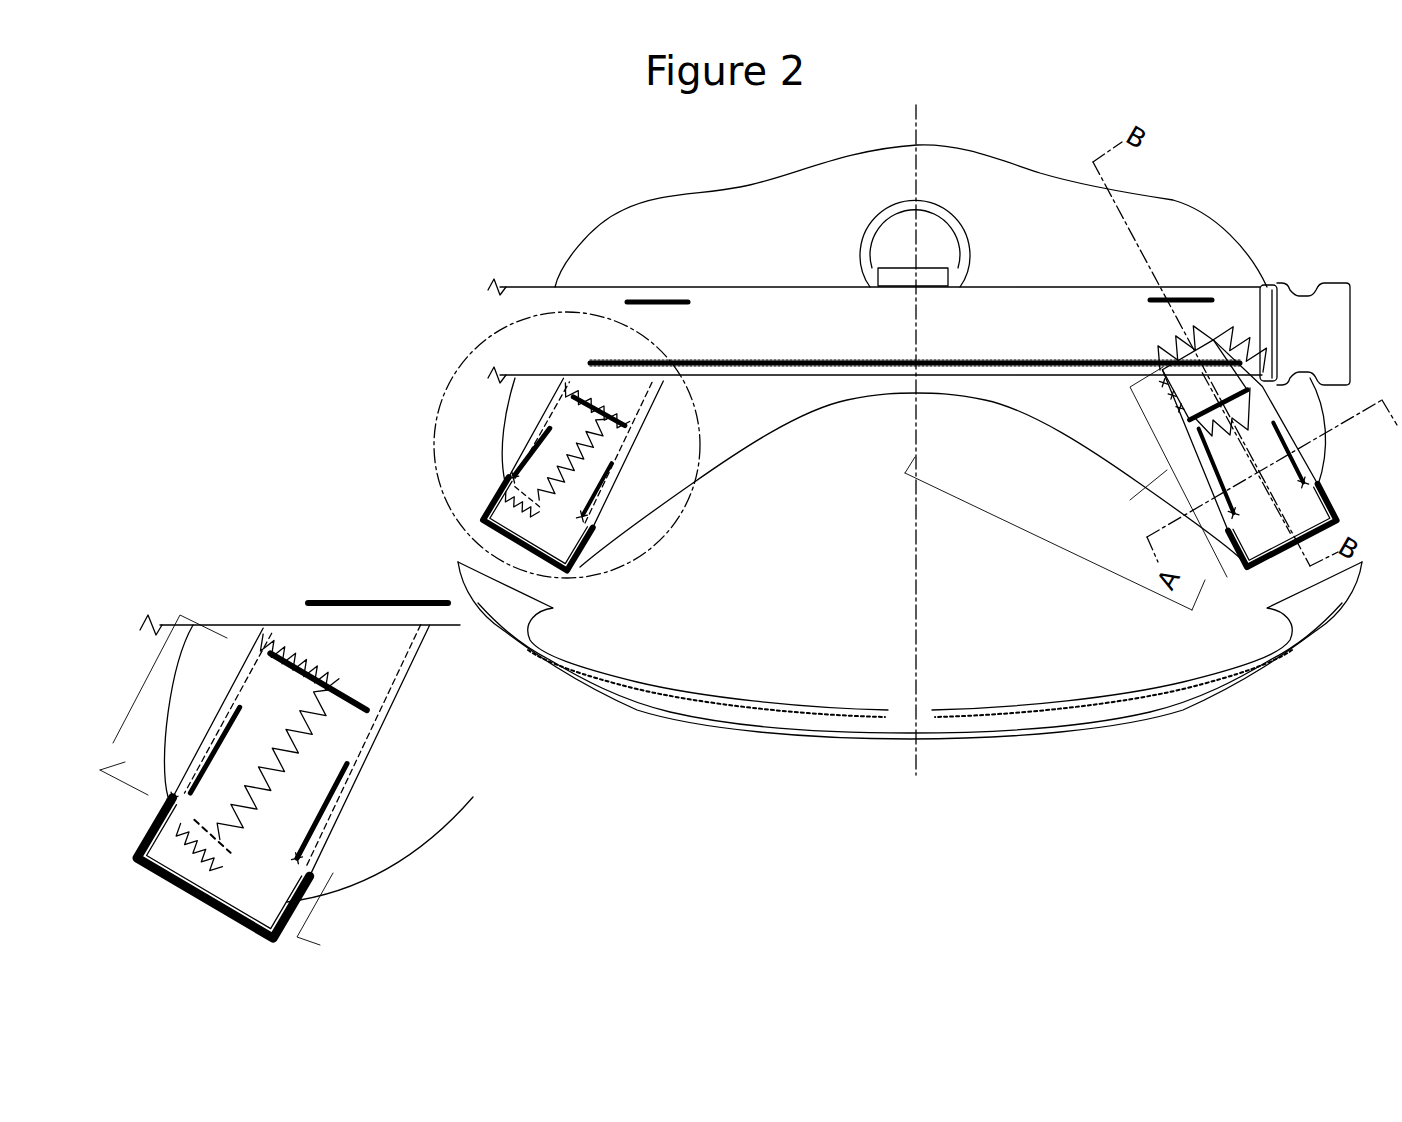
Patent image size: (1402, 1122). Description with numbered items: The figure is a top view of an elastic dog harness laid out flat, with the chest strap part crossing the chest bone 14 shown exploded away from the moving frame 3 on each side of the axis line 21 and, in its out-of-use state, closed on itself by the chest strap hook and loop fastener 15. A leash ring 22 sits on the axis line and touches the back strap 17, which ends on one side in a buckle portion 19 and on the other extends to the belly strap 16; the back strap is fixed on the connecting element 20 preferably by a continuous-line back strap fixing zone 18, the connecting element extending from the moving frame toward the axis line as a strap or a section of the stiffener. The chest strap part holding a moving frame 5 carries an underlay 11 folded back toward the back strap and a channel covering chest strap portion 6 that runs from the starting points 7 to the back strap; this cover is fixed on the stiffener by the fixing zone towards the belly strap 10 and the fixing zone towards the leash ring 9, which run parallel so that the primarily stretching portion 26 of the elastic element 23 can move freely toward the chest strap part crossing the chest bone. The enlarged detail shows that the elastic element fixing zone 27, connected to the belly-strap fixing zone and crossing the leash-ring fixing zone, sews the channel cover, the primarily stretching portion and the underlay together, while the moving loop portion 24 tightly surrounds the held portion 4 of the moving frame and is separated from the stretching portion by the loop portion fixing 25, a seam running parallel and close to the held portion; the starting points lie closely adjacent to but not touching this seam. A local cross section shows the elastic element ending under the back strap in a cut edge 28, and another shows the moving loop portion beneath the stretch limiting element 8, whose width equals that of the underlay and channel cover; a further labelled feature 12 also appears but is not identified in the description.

The moving frame 3 is at (567, 572).
The held portion 4 is at (157, 813).
The chest strap part holding a moving frame 5 is at (1167, 472).
The channel covering chest strap portion 6 is at (445, 800).
The starting points 7 is at (515, 470).
The stretch limiting element 8 is at (335, 918).
The fixing zone towards the leash ring 9 is at (1240, 497).
The fixing zone towards the belly strap 10 is at (1285, 450).
The underlay 11 is at (533, 430).
The strap segment 12 is at (147, 673).
The chest strap part crossing the chest bone 14 is at (848, 740).
The chest strap hook and loop fastener 15 is at (900, 730).
The belly strap 16 is at (497, 285).
The back strap 17 is at (792, 328).
The back strap fixing zone 18 is at (665, 302).
The buckle portion 19 is at (1335, 283).
The connecting element 20 is at (1050, 542).
The axis line 21 is at (918, 775).
The leash ring 22 is at (962, 228).
The elastic element 23 is at (565, 443).
The moving loop portion 24 is at (100, 768).
The loop portion fixing 25 is at (247, 778).
The primarily stretching portion 26 is at (280, 723).
The elastic element fixing zone 27 is at (360, 693).
The cut edge 28 is at (1168, 350).